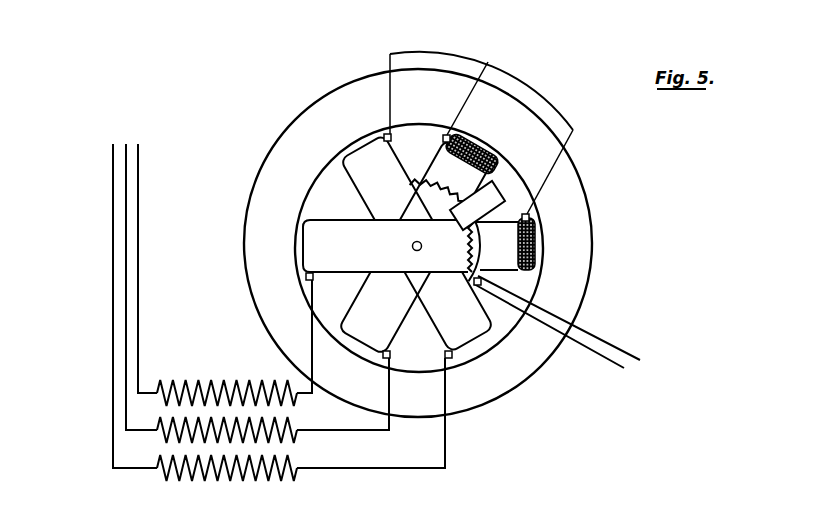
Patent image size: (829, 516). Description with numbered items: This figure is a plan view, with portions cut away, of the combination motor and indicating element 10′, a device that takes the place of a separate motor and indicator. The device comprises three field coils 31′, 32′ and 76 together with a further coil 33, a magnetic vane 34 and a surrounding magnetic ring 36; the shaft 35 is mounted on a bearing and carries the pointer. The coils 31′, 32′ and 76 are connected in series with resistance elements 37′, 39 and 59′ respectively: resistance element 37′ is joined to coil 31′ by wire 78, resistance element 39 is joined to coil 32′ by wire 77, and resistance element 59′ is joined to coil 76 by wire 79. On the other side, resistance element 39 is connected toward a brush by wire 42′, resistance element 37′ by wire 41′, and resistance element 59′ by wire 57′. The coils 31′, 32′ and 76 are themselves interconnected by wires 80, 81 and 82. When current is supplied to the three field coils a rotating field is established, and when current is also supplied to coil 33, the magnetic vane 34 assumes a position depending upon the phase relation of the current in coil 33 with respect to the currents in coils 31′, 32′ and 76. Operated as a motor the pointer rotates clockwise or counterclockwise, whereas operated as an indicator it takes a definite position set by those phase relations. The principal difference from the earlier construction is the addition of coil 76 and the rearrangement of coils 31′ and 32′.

The combination motor and indicating element 10′ is at (303, 111).
The coil 31′ is at (303, 240).
The coil 32′ is at (381, 352).
The coil 33 is at (418, 181).
The magnetic vane 34 is at (493, 187).
The shaft 35 is at (401, 250).
The magnetic ring 36 is at (580, 241).
The resistance element 37′ is at (200, 383).
The resistance element 39 is at (155, 432).
The wire 41′ is at (138, 281).
The wire 42′ is at (126, 265).
The wire 57′ is at (113, 208).
The resistance element 59′ is at (203, 482).
The coil 76 is at (473, 339).
The wire 77 is at (357, 432).
The wire 78 is at (312, 325).
The wire 79 is at (447, 445).
The wire 80 is at (390, 58).
The wire 81 is at (490, 72).
The wire 82 is at (556, 124).